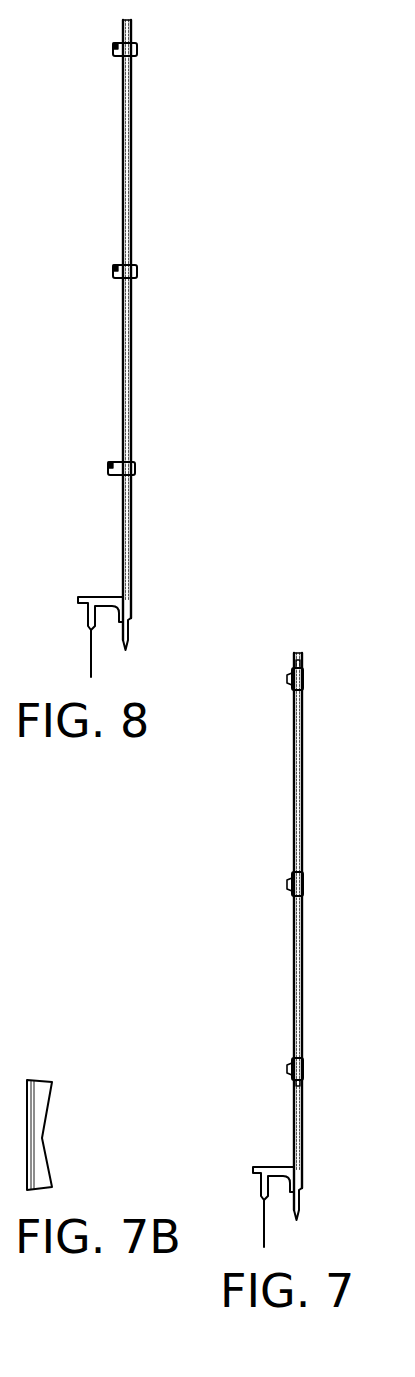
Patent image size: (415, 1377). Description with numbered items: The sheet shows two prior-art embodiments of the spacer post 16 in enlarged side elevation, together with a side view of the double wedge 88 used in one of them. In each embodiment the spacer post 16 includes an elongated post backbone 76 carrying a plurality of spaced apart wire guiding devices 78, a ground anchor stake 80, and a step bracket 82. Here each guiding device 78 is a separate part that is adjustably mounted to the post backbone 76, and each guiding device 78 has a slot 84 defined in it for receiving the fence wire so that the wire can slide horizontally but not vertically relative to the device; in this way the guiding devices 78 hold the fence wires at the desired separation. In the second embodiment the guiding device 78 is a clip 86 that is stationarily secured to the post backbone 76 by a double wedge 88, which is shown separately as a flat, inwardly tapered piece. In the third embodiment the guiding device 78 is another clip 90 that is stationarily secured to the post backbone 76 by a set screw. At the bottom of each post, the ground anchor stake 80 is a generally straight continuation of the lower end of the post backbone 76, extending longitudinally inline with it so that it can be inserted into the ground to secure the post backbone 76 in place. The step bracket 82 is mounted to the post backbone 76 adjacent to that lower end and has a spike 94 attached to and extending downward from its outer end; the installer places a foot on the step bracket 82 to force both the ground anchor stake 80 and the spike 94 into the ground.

In FIG. 8, the spacer post 16 is at (223, 80).
In FIG. 7, the spacer post 16 is at (260, 800).
In FIG. 8, the post backbone 76 is at (133, 178).
In FIG. 7, the post backbone 76 is at (303, 803).
In FIG. 8, the wire guiding device 78 is at (137, 47).
In FIG. 7, the wire guiding device 78 is at (304, 678).
In FIG. 8, the ground anchor stake 80 is at (129, 632).
In FIG. 7, the ground anchor stake 80 is at (300, 1203).
In FIG. 8, the step bracket 82 is at (115, 598).
In FIG. 7, the step bracket 82 is at (275, 1168).
In FIG. 8, the slot 84 is at (113, 48).
In FIG. 7, the slot 84 is at (287, 678).
In FIG. 7, the clip 86 is at (303, 690).
In FIG. 7, the double wedge 88 is at (302, 665).
In FIG. 7B, the double wedge 88 is at (50, 1107).
In FIG. 8, the clip 90 is at (118, 57).
In FIG. 8, the spike 94 is at (90, 647).
In FIG. 7, the spike 94 is at (263, 1222).